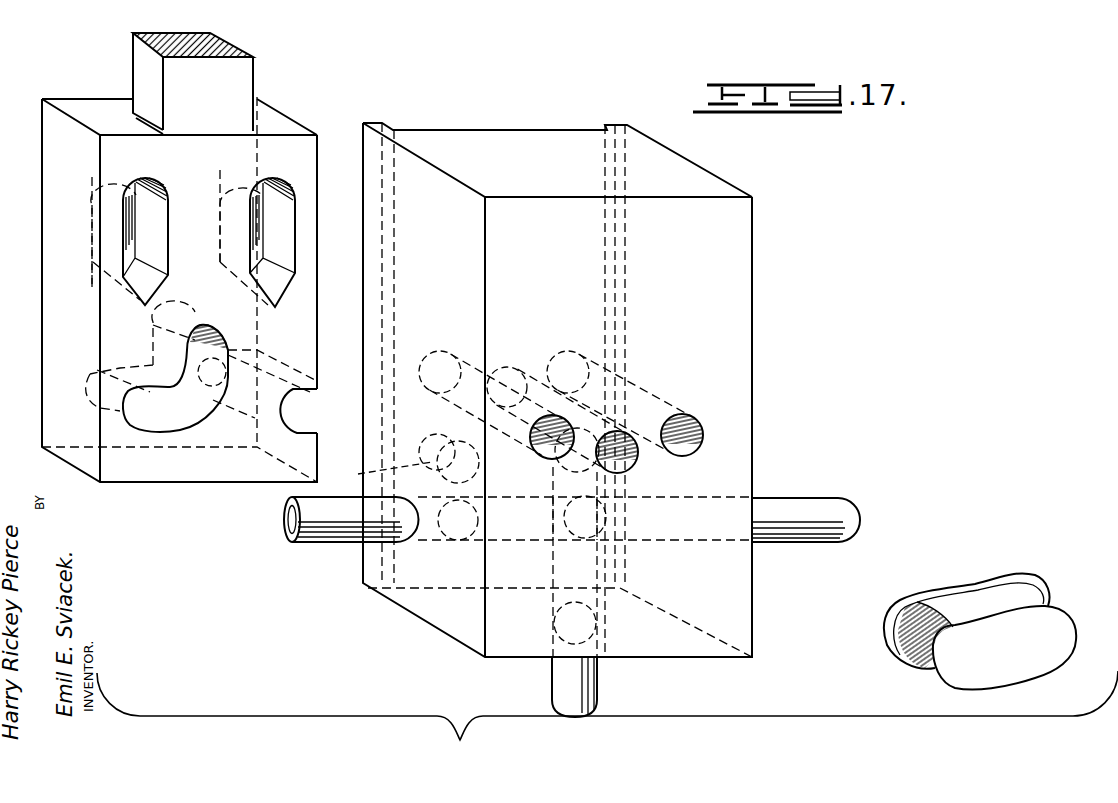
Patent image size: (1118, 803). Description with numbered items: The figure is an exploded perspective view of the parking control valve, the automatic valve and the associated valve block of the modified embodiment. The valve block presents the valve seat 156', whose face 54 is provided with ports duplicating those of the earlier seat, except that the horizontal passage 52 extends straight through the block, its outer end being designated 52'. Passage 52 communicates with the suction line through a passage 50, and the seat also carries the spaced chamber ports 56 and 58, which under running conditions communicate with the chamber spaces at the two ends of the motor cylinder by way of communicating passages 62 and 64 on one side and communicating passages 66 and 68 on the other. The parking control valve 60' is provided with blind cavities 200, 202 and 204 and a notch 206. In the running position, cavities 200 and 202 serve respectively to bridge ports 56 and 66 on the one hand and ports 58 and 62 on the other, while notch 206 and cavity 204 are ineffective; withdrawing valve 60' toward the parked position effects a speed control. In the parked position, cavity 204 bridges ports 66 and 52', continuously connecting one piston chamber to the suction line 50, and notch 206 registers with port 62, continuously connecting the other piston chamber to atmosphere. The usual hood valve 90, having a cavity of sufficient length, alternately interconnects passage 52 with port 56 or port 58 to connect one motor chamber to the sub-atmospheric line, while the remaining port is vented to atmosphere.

The valve 60' is at (199, 257).
The blind cavity 200 is at (170, 205).
The blind cavity 202 is at (287, 224).
The blind cavity 204 is at (167, 422).
The notch 206 is at (293, 388).
The face of valve seat 54 is at (742, 276).
The seat 156' is at (500, 111).
The chamber port 56 is at (440, 347).
The outer end of passage 52' is at (496, 387).
The horizontal passage 52 is at (652, 456).
The chamber port 58 is at (607, 340).
The passage 50 is at (602, 371).
The passage 62 is at (567, 498).
The passage 66 is at (377, 474).
The passage 68 is at (330, 542).
The passage 64 is at (807, 538).
The hood valve 90 is at (985, 573).